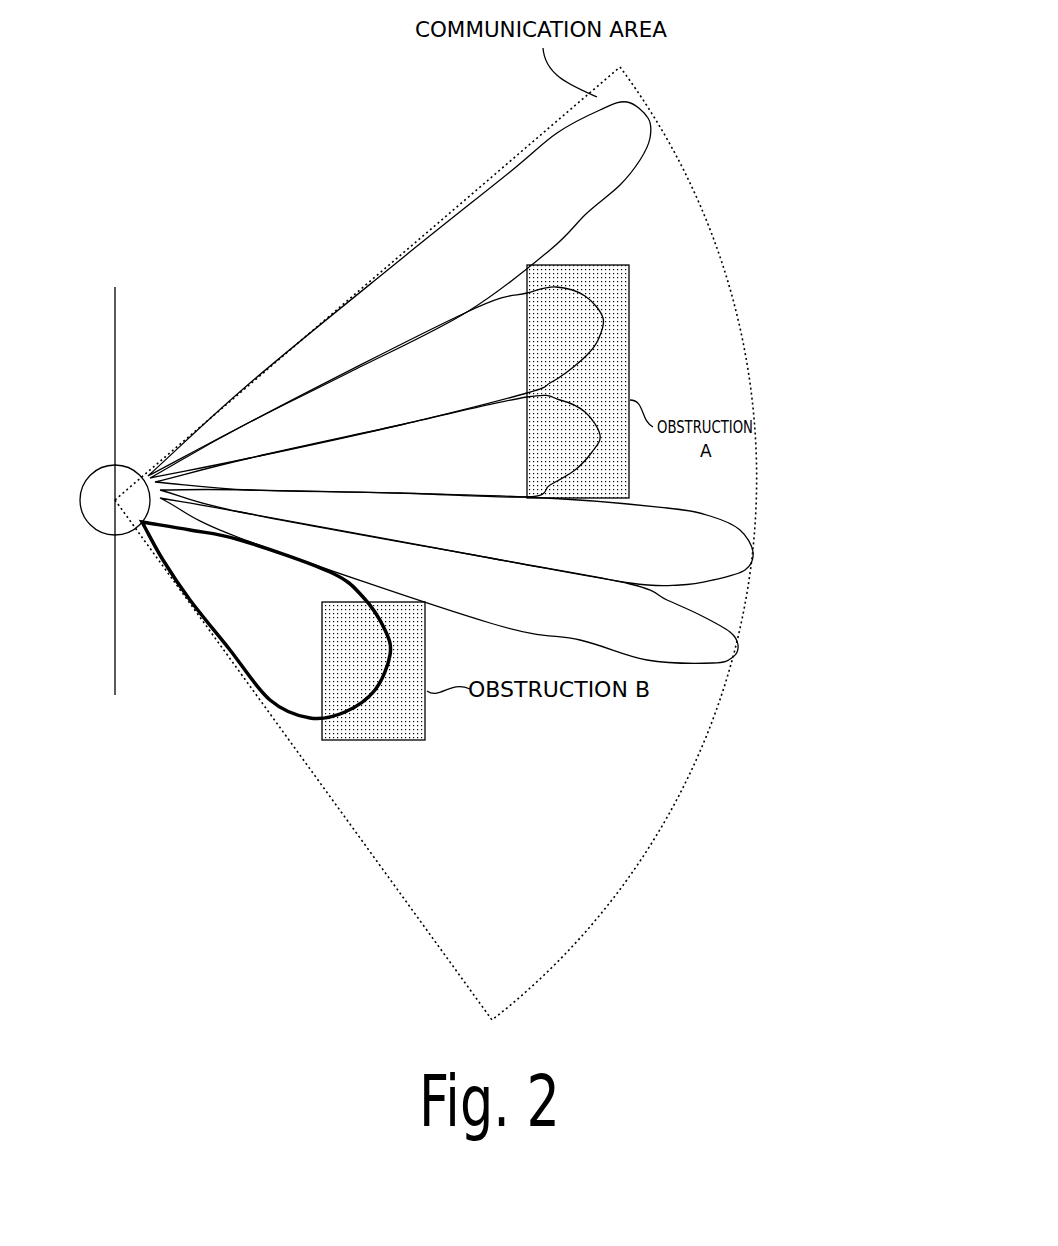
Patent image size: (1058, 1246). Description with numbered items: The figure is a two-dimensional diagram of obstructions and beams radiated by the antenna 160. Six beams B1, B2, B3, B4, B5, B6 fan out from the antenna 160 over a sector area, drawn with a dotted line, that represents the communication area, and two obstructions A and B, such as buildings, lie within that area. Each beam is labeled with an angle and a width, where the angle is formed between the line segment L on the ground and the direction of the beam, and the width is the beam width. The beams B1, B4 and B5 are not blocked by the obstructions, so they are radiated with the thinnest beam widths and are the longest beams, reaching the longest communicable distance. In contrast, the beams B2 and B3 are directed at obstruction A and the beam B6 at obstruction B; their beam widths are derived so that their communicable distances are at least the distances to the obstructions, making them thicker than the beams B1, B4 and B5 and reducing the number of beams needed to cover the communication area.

The antenna 160 is at (95, 472).
The line segment L is at (114, 479).
The beam B1 is at (640, 145).
The beam B2 is at (573, 288).
The beam B3 is at (583, 403).
The beam B4 is at (717, 583).
The beam B5 is at (665, 665).
The beam B6 is at (302, 718).